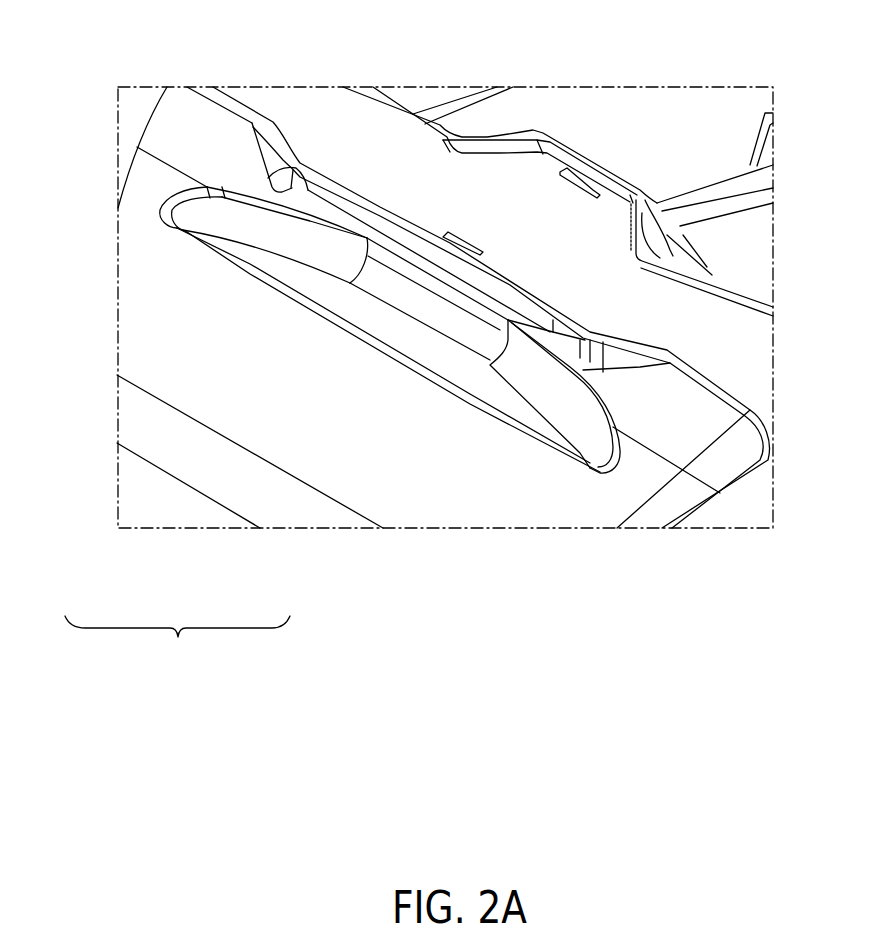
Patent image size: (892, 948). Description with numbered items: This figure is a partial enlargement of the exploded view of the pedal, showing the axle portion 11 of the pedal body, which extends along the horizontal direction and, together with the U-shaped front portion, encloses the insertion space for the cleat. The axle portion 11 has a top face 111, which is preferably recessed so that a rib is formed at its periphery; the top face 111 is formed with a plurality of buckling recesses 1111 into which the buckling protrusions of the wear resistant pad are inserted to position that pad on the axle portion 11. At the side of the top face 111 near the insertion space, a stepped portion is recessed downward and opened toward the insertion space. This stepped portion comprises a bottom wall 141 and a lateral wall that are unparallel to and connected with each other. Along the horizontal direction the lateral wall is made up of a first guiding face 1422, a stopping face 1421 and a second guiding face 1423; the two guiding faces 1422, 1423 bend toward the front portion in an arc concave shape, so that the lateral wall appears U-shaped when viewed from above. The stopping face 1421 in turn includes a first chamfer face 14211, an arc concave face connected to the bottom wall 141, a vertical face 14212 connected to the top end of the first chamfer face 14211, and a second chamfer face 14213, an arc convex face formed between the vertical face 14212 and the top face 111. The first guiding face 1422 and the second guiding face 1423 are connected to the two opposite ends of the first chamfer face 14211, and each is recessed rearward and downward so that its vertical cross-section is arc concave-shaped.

The axle portion 11 is at (723, 460).
The top face 111 is at (718, 325).
The buckling recess 1111 is at (458, 245).
The bottom wall 141 is at (478, 367).
The stopping face 1421 is at (177, 646).
The first chamfer face 14211 is at (395, 298).
The vertical face 14212 is at (463, 295).
The second chamfer face 14213 is at (390, 232).
The first guiding face 1422 is at (290, 238).
The second guiding face 1423 is at (564, 390).